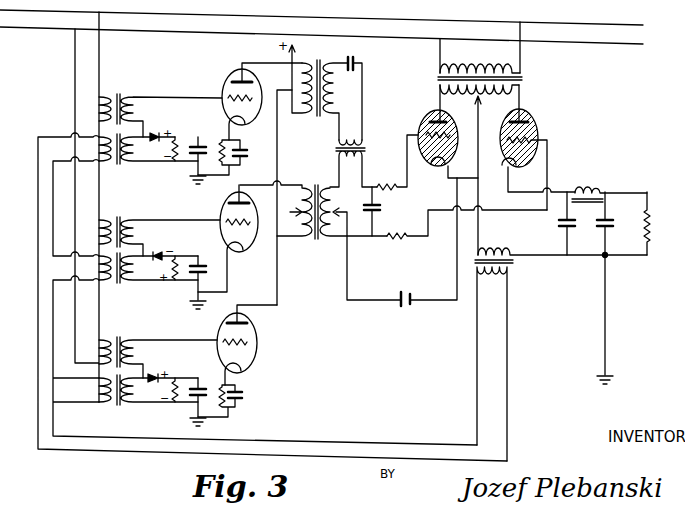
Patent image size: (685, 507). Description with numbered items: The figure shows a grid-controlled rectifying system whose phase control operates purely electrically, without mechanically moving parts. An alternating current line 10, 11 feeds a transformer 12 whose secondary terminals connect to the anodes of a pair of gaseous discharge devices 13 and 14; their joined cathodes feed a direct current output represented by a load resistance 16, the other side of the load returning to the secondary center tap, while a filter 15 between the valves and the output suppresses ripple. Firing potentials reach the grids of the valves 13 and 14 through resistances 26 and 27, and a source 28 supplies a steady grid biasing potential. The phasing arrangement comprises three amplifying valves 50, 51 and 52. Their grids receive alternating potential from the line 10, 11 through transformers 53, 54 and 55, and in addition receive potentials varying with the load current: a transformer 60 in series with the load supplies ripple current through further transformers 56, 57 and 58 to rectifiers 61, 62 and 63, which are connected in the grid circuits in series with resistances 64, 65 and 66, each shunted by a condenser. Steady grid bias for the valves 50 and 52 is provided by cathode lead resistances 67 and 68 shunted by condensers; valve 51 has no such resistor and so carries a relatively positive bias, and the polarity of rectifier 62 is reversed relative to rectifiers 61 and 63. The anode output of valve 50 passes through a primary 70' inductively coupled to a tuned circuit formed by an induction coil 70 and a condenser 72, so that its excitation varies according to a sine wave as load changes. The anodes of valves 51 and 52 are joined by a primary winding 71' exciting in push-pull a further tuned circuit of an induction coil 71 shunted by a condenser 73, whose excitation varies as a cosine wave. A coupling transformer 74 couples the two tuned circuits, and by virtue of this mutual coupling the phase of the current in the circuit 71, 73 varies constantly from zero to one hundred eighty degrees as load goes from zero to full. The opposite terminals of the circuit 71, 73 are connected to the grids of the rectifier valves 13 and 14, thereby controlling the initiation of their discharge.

The alternating current line 10 is at (611, 24).
The alternating current line 11 is at (585, 43).
The transformer 12 is at (522, 81).
The gaseous discharge device 13 is at (432, 111).
The gaseous discharge device 14 is at (531, 118).
The filter 15 is at (603, 221).
The load resistance 16 is at (651, 226).
The resistance 26 is at (397, 162).
The resistance 27 is at (391, 241).
The source for grid biasing potential 28 is at (419, 286).
The amplifying valve 50 is at (261, 86).
The amplifying valve 51 is at (258, 223).
The amplifying valve 52 is at (258, 337).
The transformer 53 is at (120, 97).
The transformer 54 is at (119, 218).
The transformer 55 is at (119, 338).
The transformer 56 is at (119, 164).
The transformer 57 is at (119, 284).
The transformer 58 is at (119, 404).
The transformer 60 is at (513, 263).
The rectifier 61 is at (156, 135).
The rectifier 62 is at (157, 253).
The rectifier 63 is at (154, 374).
The resistance 64 is at (178, 143).
The resistance 65 is at (178, 262).
The resistance 66 is at (178, 384).
The resistance 67 is at (222, 152).
The resistance 68 is at (221, 395).
The induction coil 70 is at (335, 100).
The primary 70' is at (308, 78).
The induction coil 71 is at (357, 242).
The primary winding 71' is at (279, 199).
The condenser 72 is at (354, 61).
The condenser 73 is at (375, 204).
The coupling transformer 74 is at (363, 152).